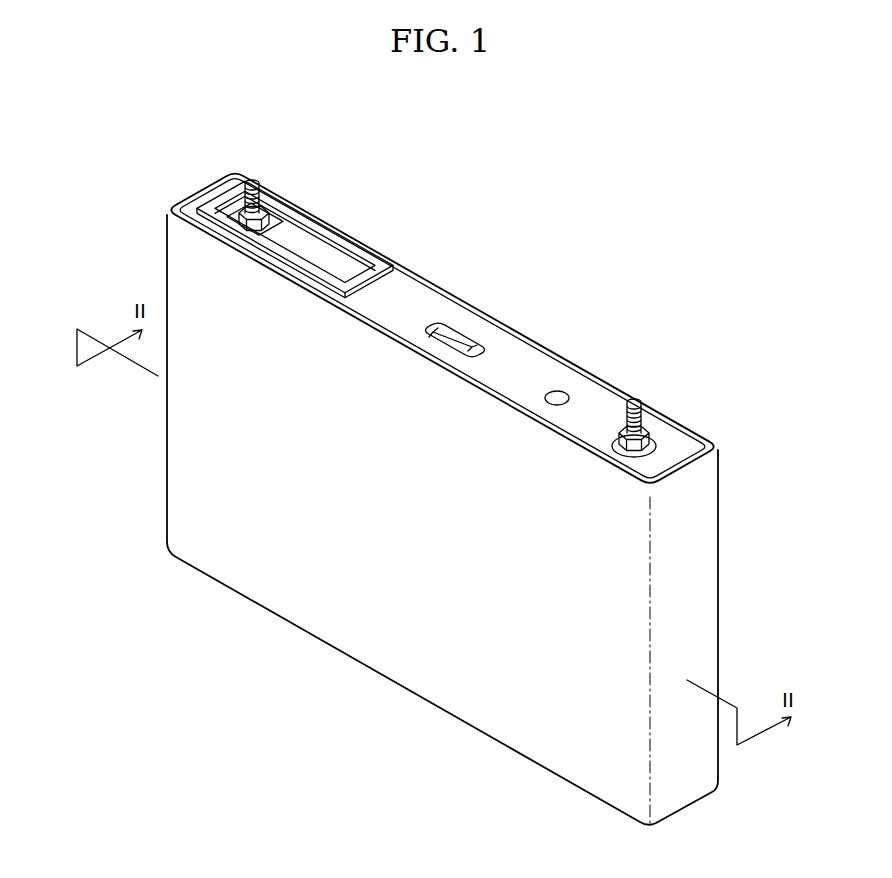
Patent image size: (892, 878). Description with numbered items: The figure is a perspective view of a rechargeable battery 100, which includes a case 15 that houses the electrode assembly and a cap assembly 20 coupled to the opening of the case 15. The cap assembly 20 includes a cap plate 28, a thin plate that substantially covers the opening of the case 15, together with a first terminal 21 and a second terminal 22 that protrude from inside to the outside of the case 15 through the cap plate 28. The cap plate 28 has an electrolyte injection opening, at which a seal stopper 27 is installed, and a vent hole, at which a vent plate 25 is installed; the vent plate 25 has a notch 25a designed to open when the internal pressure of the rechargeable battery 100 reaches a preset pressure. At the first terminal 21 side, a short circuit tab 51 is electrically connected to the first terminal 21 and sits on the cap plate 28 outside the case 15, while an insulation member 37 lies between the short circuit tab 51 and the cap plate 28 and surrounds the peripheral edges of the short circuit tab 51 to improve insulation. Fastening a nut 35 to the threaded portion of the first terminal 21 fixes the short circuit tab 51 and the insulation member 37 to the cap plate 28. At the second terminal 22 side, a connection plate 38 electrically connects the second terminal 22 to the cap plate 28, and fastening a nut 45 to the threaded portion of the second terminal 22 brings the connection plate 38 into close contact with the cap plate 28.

The rechargeable battery 100 is at (553, 308).
The case 15 is at (390, 648).
The cap assembly 20 is at (405, 264).
The first terminal 21 is at (254, 183).
The second terminal 22 is at (635, 401).
The vent plate 25 is at (455, 327).
The notch 25a is at (464, 338).
The seal stopper 27 is at (560, 392).
The cap plate 28 is at (421, 294).
The nut 35 is at (224, 212).
The insulation member 37 is at (339, 238).
The connection plate 38 is at (661, 451).
The nut 45 is at (647, 427).
The short circuit tab 51 is at (289, 233).